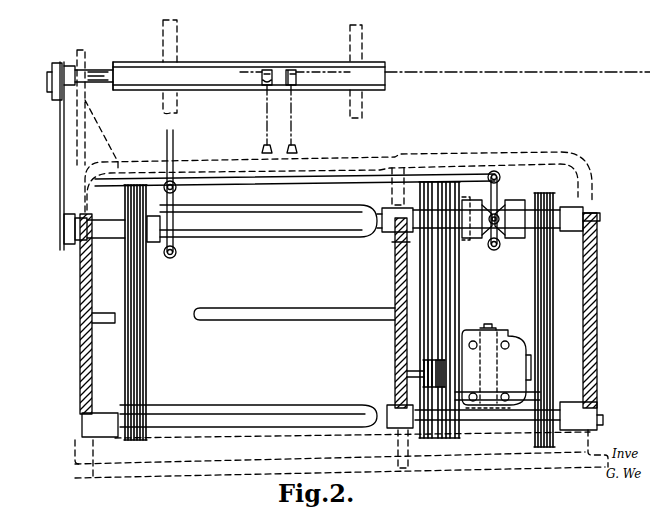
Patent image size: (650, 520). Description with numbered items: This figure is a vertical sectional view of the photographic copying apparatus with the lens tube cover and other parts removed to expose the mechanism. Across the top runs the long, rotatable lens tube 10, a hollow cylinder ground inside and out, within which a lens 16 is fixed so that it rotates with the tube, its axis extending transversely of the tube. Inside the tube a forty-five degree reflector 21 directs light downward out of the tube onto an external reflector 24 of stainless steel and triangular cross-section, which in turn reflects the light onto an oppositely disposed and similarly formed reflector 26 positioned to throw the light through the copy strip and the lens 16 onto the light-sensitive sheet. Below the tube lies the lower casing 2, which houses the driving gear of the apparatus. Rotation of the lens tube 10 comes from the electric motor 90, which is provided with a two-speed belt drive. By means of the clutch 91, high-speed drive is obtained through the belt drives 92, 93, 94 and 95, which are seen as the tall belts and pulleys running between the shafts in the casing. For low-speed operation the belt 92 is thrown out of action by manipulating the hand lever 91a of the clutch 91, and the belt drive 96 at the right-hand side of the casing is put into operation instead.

The lower casing 2 is at (597, 243).
The lens tube 10 is at (200, 62).
The lens 16 is at (268, 70).
The reflector 21 is at (292, 70).
The reflector 24 is at (297, 148).
The reflector 26 is at (262, 150).
The electric motor 90 is at (492, 346).
The clutch 91 is at (484, 200).
The hand lever 91a is at (368, 180).
The belt drive 92 is at (423, 372).
The belt drive 93 is at (440, 330).
The belt drive 94 is at (140, 318).
The belt drive 95 is at (60, 148).
The belt drive 96 is at (565, 290).